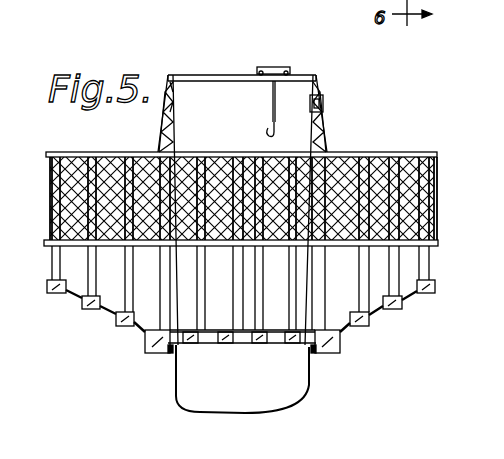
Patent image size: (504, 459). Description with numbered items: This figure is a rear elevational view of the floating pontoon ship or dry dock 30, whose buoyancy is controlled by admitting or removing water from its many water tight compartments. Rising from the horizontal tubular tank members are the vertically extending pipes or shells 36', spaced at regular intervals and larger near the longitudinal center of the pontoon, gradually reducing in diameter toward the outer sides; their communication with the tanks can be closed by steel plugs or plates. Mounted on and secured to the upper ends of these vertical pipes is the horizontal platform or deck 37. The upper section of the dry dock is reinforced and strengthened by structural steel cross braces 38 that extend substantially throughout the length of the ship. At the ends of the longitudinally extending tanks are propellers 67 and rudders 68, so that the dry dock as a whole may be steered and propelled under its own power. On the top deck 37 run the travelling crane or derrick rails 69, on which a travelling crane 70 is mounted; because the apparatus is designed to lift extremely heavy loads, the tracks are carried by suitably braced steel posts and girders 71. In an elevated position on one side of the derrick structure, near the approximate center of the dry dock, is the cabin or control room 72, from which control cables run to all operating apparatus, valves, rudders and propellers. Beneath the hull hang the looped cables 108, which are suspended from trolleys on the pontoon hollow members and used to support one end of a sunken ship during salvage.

The pontoon ship or dry dock 30 is at (249, 198).
The vertical pipe 36' is at (261, 288).
The horizontal platform or deck 37 is at (388, 153).
The structural steel cross braces 38 is at (63, 197).
The propellers 67 is at (148, 336).
The rudders 68 is at (92, 310).
The travelling crane or derrick rails 69 is at (311, 81).
The travelling crane 70 is at (276, 67).
The steel posts and girders 71 is at (310, 135).
The cabin or control room 72 is at (323, 101).
The looped cables 108 is at (311, 383).